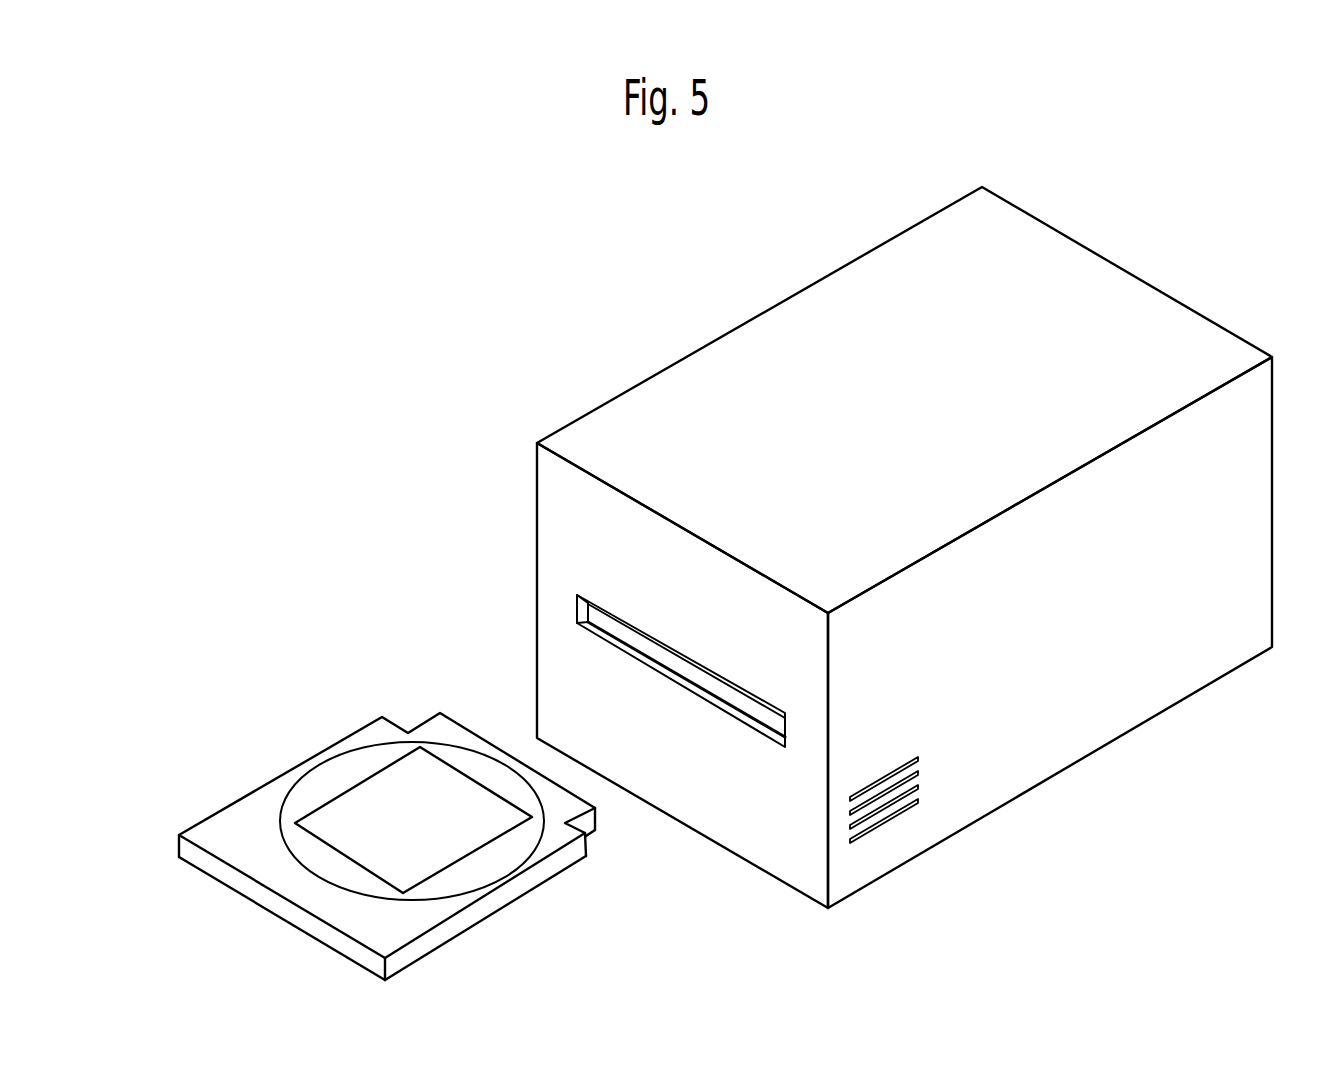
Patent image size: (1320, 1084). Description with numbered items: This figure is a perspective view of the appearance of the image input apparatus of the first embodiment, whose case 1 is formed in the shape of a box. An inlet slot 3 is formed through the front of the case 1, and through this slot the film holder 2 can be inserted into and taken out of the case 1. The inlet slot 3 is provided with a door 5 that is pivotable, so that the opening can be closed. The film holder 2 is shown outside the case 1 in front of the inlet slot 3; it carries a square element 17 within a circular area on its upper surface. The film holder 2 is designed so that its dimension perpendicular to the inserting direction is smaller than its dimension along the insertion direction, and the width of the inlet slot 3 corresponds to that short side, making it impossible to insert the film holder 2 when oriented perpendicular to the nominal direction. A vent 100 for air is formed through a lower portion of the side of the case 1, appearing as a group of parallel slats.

The case 1 is at (688, 357).
The film holder 2 is at (233, 820).
The inlet slot 3 is at (600, 642).
The door 5 is at (577, 597).
The cartridge 17 is at (363, 797).
The vent 100 is at (890, 825).